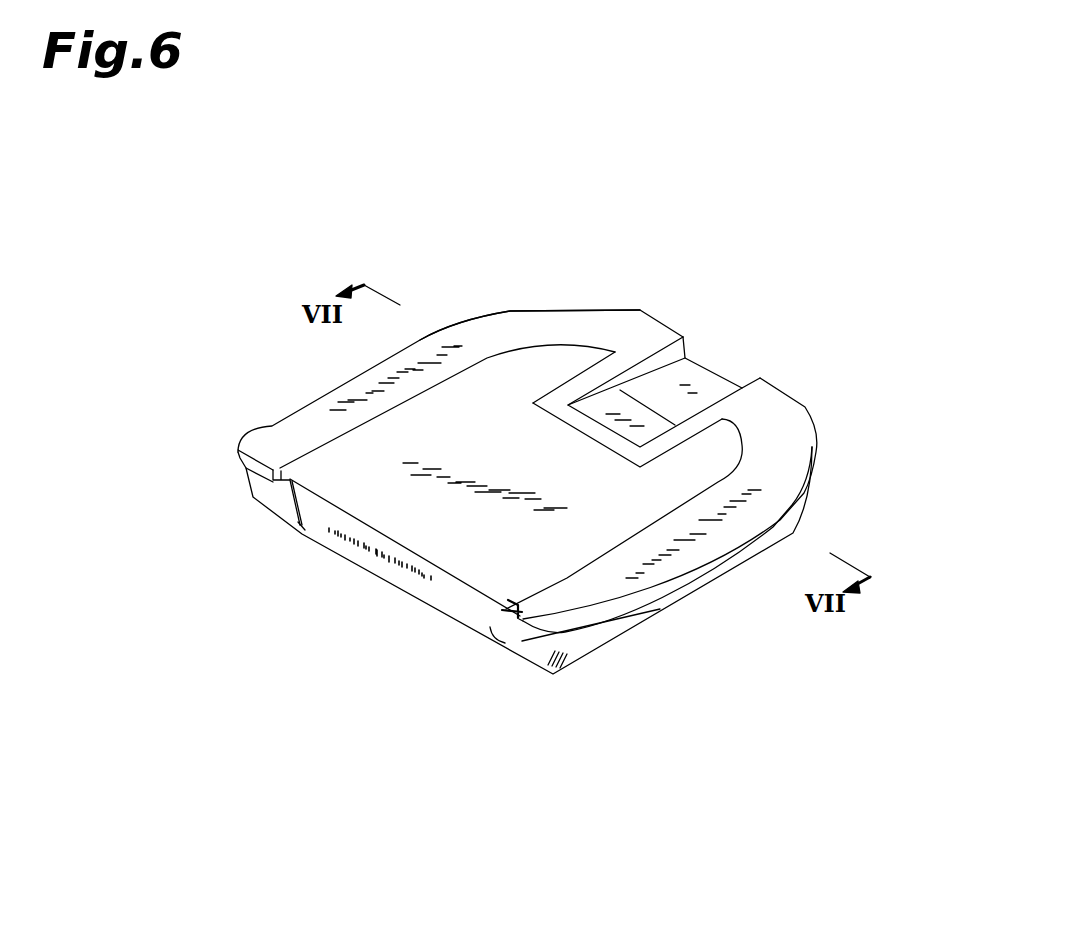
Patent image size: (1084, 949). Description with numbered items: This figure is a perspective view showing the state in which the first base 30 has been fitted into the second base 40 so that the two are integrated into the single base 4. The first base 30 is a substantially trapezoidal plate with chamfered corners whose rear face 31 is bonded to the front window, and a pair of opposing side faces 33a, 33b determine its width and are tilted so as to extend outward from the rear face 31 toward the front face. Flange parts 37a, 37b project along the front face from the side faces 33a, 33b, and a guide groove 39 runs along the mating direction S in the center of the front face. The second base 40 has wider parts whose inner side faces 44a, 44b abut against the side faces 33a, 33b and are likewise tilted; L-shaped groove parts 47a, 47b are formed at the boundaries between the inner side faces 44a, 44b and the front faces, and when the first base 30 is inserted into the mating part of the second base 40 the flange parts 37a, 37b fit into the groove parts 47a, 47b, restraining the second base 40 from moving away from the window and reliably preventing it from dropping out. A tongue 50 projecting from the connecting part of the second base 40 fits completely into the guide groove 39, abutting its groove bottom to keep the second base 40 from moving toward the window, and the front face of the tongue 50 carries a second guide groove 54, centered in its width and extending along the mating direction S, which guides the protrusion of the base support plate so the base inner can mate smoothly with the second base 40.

The base 4 is at (660, 191).
The first base 30 is at (421, 611).
The rear face 31 is at (386, 565).
The side face 33a is at (513, 642).
The side face 33b is at (290, 508).
The flange part 37a is at (550, 578).
The flange part 37b is at (311, 462).
The guide groove 39 is at (578, 378).
The second base 40 is at (820, 443).
The inner side face 44a is at (492, 632).
The inner side face 44b is at (303, 506).
The groove part 47a is at (508, 600).
The groove part 47b is at (288, 482).
The tongue 50 is at (570, 430).
The guide groove 54 is at (673, 394).
The mating direction S is at (735, 350).